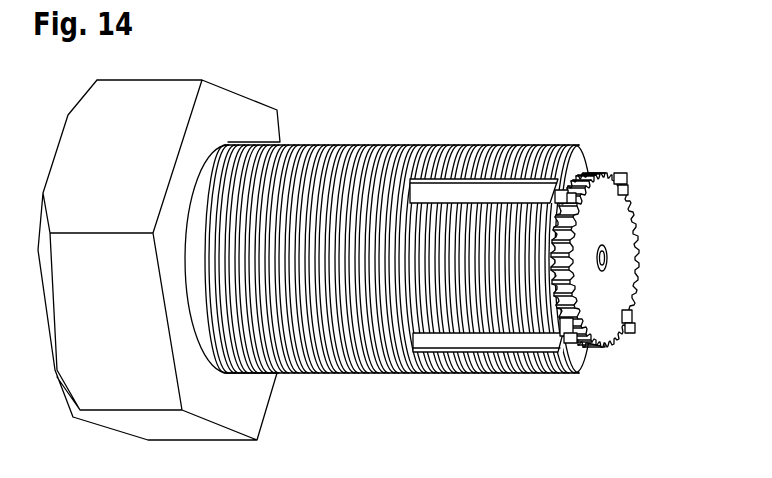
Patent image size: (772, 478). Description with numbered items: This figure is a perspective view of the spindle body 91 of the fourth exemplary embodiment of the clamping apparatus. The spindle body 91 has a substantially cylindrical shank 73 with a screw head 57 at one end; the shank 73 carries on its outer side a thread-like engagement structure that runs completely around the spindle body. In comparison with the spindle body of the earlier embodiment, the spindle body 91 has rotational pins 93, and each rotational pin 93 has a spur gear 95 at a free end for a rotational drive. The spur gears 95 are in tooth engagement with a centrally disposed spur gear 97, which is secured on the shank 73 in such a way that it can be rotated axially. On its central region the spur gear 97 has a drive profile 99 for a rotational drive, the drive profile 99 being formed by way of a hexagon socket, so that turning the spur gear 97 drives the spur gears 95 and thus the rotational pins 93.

The screw head 57 is at (163, 142).
The shank 73 is at (390, 148).
The spindle body 91 is at (625, 138).
The rotational pin 93 is at (510, 193).
The spur gear 95 is at (592, 153).
The spur gear 97 is at (625, 255).
The drive profile 99 is at (607, 267).